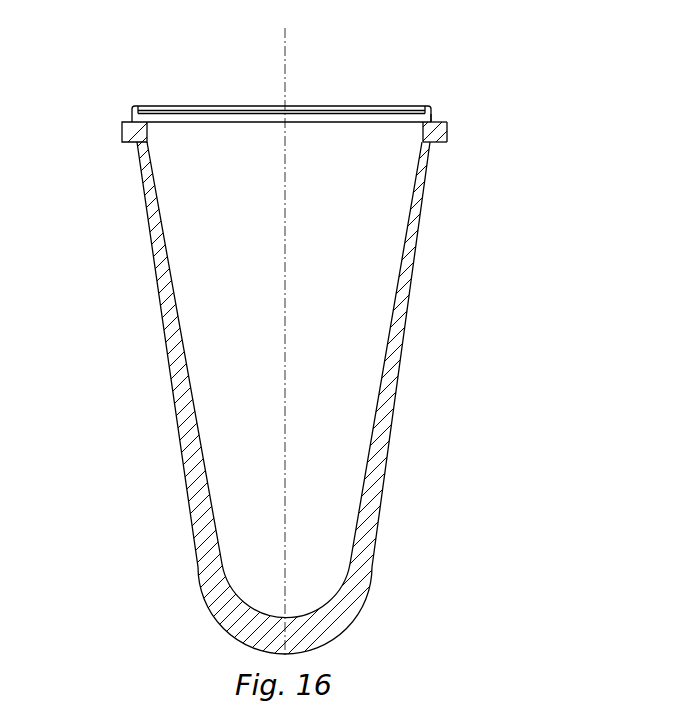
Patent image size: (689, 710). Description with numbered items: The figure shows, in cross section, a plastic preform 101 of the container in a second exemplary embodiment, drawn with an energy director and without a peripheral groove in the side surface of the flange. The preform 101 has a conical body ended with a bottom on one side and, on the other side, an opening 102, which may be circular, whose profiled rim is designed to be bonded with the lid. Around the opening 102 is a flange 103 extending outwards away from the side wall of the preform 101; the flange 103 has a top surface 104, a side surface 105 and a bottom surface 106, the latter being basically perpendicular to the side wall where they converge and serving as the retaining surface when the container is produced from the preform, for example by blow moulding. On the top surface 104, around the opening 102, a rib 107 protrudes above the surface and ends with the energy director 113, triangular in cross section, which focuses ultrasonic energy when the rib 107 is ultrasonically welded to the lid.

The preform 101 is at (344, 355).
The opening 102 is at (235, 342).
The flange 103 is at (94, 108).
The top surface 104 is at (496, 100).
The side surface 105 is at (518, 131).
The bottom surface 106 is at (474, 151).
The rib 107 is at (489, 79).
The energy director 113 is at (281, 87).